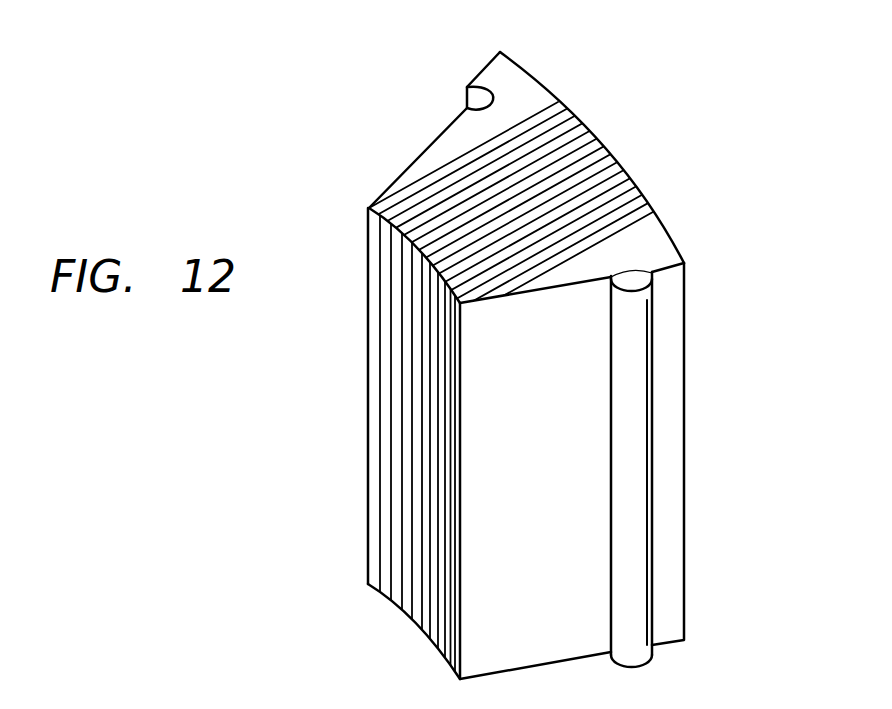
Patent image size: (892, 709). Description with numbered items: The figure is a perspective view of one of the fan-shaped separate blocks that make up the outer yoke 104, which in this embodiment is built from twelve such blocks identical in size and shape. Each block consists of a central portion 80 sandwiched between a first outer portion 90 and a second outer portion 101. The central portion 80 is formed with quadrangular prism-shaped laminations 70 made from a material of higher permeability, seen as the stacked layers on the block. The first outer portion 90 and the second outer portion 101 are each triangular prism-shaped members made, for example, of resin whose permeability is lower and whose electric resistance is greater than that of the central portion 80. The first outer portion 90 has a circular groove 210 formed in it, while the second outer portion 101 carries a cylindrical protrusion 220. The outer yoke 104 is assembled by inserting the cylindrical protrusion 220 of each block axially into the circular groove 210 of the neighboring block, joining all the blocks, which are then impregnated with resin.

The laminations 70 is at (610, 197).
The central portion 80 is at (467, 205).
The first outer portion 90 is at (522, 82).
The second outer portion 101 is at (657, 252).
The outer yoke 104 is at (655, 213).
The circular groove 210 is at (467, 92).
The cylindrical protrusion 220 is at (652, 279).